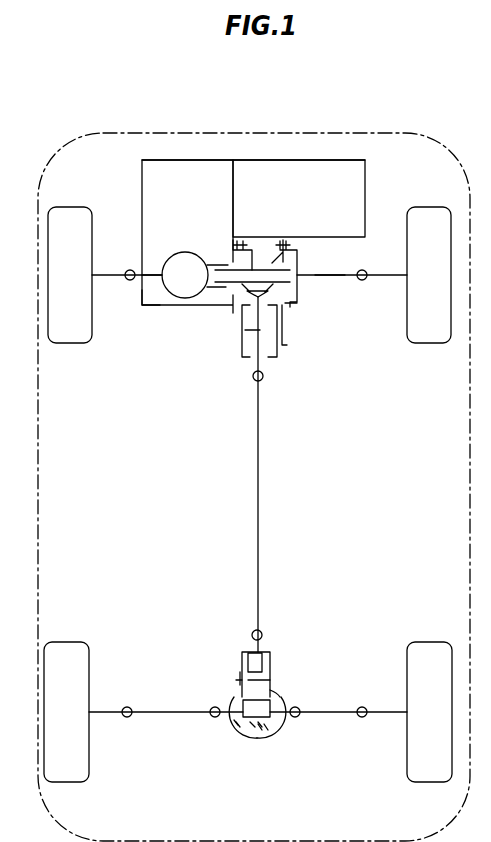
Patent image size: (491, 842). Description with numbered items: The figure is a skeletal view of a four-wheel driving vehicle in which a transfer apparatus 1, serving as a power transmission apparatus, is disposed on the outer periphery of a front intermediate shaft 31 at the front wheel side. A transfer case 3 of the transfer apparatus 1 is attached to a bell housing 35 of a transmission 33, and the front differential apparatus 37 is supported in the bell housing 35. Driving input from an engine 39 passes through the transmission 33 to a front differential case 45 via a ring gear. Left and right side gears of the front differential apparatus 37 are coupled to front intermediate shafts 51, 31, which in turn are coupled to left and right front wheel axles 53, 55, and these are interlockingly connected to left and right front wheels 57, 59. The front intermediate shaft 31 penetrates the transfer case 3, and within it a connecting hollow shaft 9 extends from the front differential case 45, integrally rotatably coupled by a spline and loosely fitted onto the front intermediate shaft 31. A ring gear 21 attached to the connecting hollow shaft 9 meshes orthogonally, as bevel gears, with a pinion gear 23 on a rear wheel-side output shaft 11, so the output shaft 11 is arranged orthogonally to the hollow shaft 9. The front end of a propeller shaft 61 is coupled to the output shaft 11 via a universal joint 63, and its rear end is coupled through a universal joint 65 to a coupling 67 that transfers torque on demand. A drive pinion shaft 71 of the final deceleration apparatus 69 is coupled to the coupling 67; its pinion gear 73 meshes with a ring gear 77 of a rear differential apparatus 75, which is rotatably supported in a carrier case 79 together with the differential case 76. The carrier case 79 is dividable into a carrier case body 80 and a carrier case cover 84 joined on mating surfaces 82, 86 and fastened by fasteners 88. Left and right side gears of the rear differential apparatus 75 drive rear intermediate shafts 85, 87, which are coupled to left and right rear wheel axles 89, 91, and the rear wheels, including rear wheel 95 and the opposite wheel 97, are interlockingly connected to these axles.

The transfer apparatus 1 is at (300, 302).
The transfer case 3 is at (289, 318).
The connecting hollow shaft 9 is at (253, 266).
The rear wheel-side output shaft 11 is at (245, 331).
The ring gear 21 is at (276, 258).
The pinion gear 23 is at (253, 287).
The front intermediate shaft 31 is at (328, 273).
The transmission 33 is at (189, 160).
The bell housing 35 is at (140, 305).
The front differential apparatus 37 is at (182, 299).
The engine 39 is at (295, 160).
The front differential case 45 is at (170, 297).
The front intermediate shaft 51 is at (142, 245).
The front wheel axle 53 is at (108, 270).
The front wheel axle 55 is at (388, 272).
The front wheel 57 is at (72, 207).
The front wheel 59 is at (433, 207).
The propeller shaft 61 is at (260, 492).
The universal joint 63 is at (264, 378).
The universal joint 65 is at (260, 630).
The coupling 67 is at (264, 663).
The final deceleration apparatus 69 is at (233, 669).
The drive pinion shaft 71 is at (272, 680).
The pinion gear 73 is at (277, 697).
The rear differential apparatus 75 is at (257, 719).
The differential case 76 is at (260, 730).
The ring gear 77 is at (253, 727).
The carrier case 79 is at (266, 730).
The carrier case body 80 is at (260, 727).
The mating surface 82 is at (236, 724).
The carrier case cover 84 is at (237, 733).
The rear intermediate shaft 85 is at (228, 720).
The mating surface 86 is at (240, 684).
The rear intermediate shaft 87 is at (276, 726).
The fastener 88 is at (240, 677).
The rear wheel axle 89 is at (155, 712).
The rear wheel axle 91 is at (350, 710).
The rear wheel 95 is at (72, 642).
The right rear wheel 97 is at (433, 642).